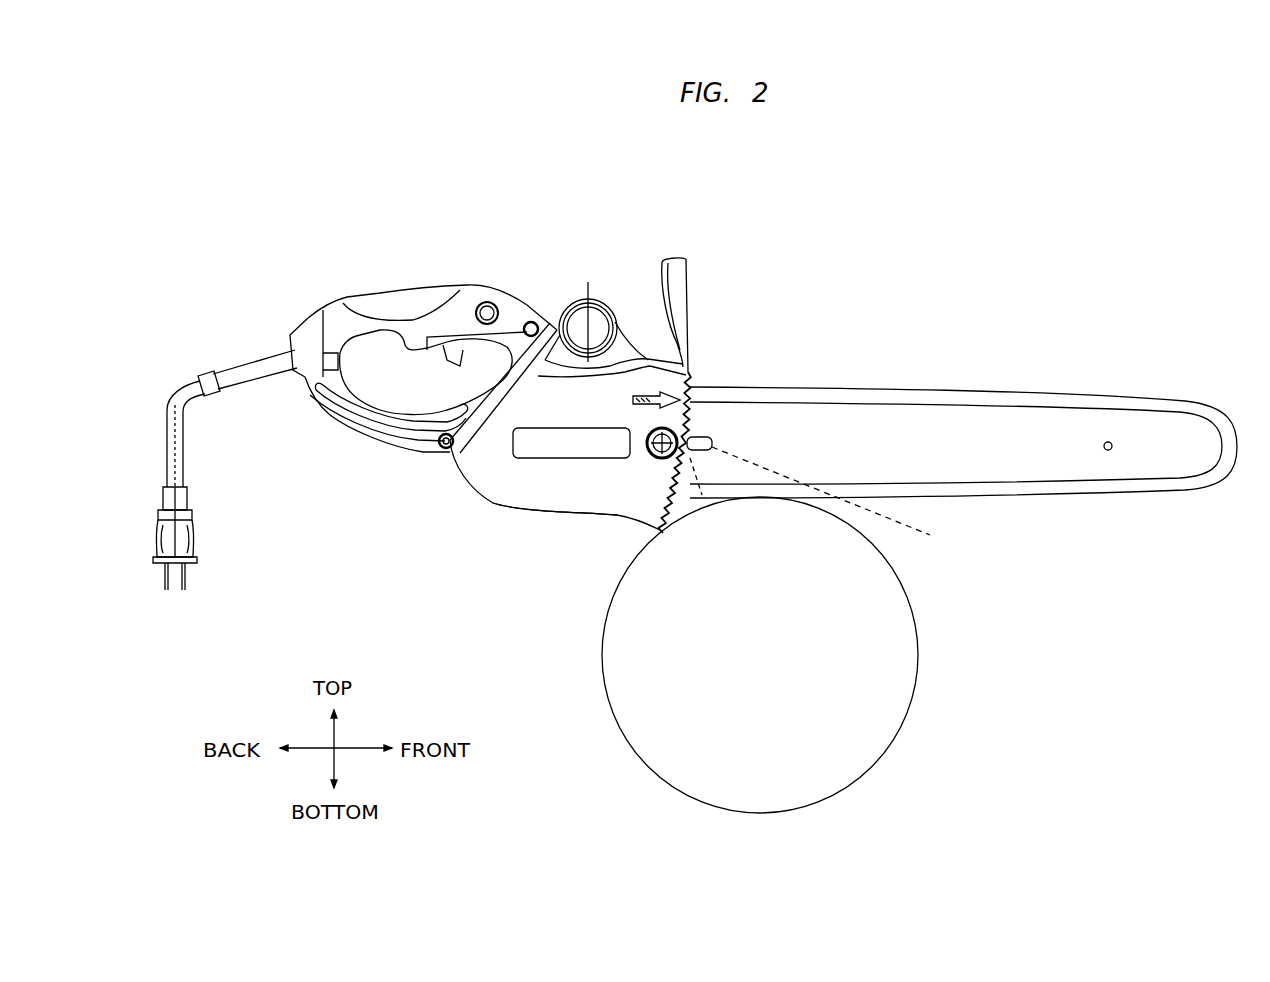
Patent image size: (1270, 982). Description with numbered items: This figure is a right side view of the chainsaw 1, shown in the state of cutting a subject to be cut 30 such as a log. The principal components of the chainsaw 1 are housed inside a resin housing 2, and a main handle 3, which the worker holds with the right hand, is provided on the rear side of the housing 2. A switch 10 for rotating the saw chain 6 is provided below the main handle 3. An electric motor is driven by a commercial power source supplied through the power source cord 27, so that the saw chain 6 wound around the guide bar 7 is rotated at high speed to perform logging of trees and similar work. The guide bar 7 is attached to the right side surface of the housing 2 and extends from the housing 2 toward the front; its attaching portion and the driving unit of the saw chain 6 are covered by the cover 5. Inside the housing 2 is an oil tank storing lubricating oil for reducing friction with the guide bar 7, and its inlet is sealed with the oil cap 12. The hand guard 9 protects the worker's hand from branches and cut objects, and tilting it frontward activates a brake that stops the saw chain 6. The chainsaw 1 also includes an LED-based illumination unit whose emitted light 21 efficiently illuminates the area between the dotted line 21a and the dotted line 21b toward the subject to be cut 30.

The chainsaw 1 is at (1152, 226).
The housing 2 is at (632, 347).
The main handle 3 is at (388, 300).
The cover 5 is at (528, 483).
The saw chain 6 is at (905, 400).
The guide bar 7 is at (1020, 437).
The hand guard 9 is at (677, 273).
The switch 10 is at (453, 357).
The oil cap 12 is at (580, 322).
The emitted light 21 is at (841, 328).
The dotted line 21a is at (778, 473).
The dotted line 21b is at (697, 472).
The power source cord 27 is at (185, 452).
The subject to be cut 30 is at (870, 670).